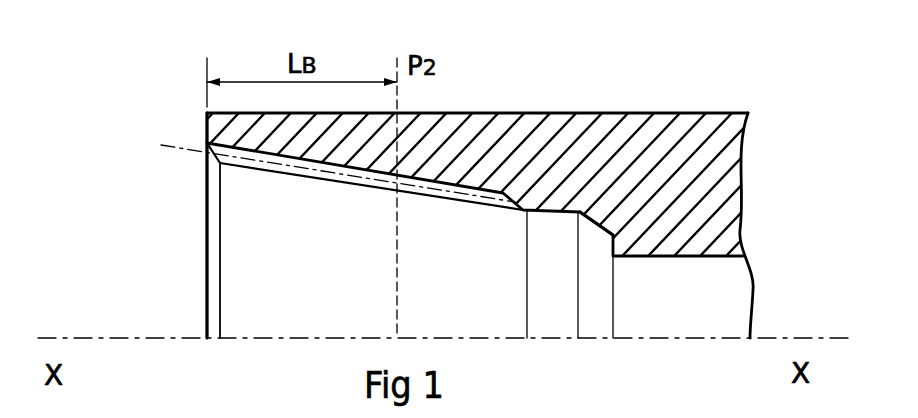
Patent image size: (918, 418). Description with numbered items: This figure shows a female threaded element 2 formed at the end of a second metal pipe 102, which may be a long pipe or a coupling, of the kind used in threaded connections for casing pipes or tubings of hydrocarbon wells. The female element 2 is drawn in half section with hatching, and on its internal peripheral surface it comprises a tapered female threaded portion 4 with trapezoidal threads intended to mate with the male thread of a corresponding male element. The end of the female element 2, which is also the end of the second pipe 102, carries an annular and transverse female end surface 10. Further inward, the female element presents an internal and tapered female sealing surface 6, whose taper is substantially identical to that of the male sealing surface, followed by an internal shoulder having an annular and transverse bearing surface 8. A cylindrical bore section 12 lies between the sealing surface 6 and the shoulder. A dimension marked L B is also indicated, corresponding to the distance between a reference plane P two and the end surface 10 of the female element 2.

The female element 2 is at (481, 171).
The tapered female threaded portion 4 is at (335, 172).
The female sealing surface 6 is at (607, 220).
The bearing surface 8 is at (610, 240).
The female end surface 10 is at (207, 128).
The cylindrical bore section 12 is at (555, 213).
The second metal pipe 102 is at (680, 130).